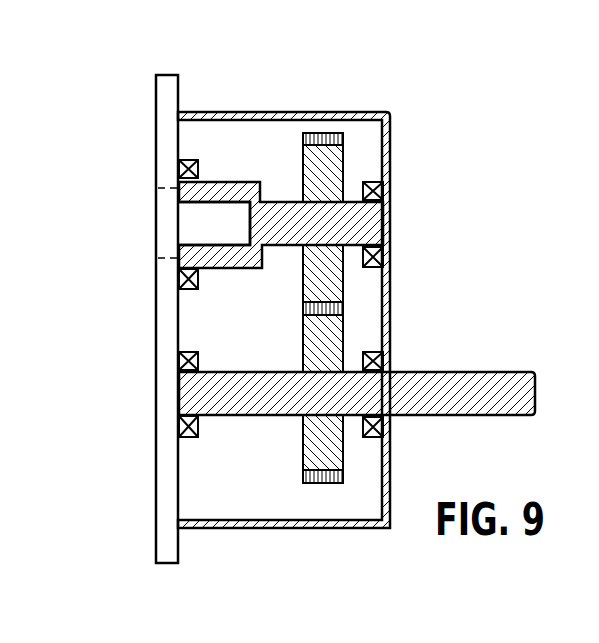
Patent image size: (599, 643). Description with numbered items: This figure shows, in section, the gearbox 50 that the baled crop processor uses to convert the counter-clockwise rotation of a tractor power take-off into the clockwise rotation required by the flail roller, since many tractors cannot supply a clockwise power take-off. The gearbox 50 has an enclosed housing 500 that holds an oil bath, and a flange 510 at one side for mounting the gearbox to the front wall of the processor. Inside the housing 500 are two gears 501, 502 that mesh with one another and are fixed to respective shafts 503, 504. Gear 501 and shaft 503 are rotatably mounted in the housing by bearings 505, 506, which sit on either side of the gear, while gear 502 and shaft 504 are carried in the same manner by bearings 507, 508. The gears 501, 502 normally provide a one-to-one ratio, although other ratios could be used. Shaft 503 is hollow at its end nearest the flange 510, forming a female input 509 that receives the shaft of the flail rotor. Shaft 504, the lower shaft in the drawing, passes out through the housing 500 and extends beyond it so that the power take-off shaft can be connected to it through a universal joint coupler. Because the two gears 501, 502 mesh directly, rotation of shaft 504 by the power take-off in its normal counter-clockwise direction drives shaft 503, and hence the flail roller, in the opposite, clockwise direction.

The gearbox 50 is at (384, 80).
The enclosed housing 500 is at (393, 167).
The gear 501 is at (345, 168).
The gear 502 is at (343, 333).
The shaft 503 is at (285, 202).
The shaft 504 is at (250, 415).
The bearing 505 is at (188, 160).
The bearing 506 is at (383, 197).
The bearing 507 is at (188, 352).
The bearing 508 is at (373, 352).
The female input 509 is at (187, 230).
The flange 510 is at (162, 543).